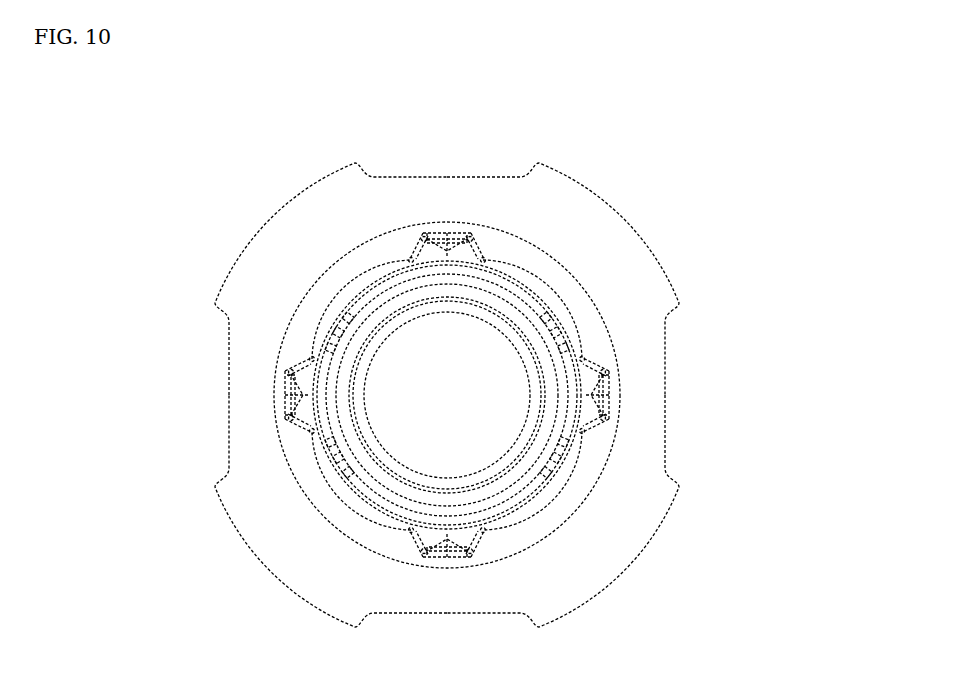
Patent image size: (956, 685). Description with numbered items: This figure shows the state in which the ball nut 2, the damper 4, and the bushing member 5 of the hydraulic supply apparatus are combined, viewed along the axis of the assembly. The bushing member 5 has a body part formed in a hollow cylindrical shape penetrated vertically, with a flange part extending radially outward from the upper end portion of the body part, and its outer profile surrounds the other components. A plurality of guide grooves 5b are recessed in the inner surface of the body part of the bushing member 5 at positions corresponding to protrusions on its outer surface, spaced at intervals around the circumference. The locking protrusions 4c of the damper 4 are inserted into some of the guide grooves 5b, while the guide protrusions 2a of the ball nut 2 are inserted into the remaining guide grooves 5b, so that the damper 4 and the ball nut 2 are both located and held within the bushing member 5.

The bushing member 5 is at (447, 366).
The guide grooves 5b is at (425, 236).
The damper 4 is at (527, 300).
The locking protrusions 4c is at (290, 375).
The ball nut 2 is at (527, 460).
The guide protrusions 2a is at (453, 241).